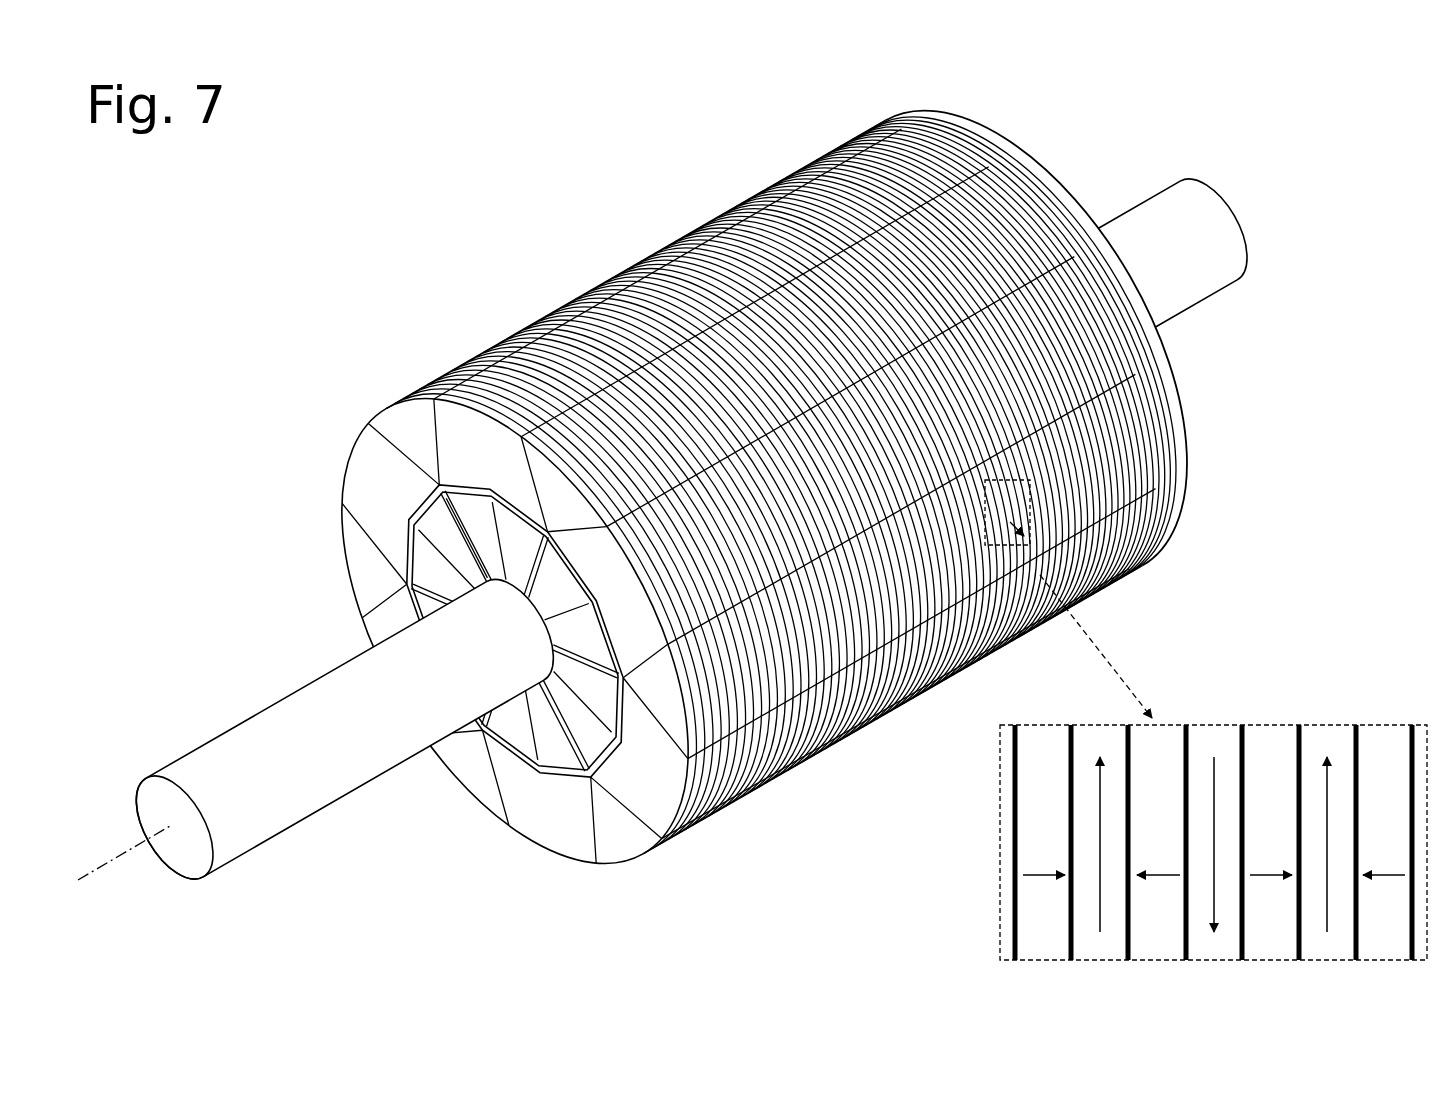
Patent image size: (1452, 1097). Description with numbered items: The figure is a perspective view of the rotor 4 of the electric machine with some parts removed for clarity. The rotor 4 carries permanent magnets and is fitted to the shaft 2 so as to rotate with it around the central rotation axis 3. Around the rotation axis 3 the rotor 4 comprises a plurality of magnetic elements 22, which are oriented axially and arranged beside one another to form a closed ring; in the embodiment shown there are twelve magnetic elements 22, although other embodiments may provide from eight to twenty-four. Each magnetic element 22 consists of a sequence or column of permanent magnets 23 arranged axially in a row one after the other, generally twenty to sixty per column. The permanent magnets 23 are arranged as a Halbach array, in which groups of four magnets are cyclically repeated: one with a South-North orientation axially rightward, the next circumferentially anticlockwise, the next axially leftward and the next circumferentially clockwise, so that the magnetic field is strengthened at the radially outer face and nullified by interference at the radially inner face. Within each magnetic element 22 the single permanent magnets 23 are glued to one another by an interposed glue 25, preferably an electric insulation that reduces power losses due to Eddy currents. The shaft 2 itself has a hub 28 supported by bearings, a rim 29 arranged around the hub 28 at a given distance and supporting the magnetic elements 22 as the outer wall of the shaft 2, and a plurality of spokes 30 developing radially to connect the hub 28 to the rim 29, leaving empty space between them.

The shaft 2 is at (350, 840).
The central rotation axis 3 is at (122, 813).
The rotor 4 is at (1262, 104).
The magnetic element 22 is at (822, 772).
The permanent magnet 23 is at (553, 345).
The glue 25 is at (1012, 882).
The hub 28 is at (536, 695).
The rim 29 is at (433, 482).
The spoke 30 is at (590, 722).